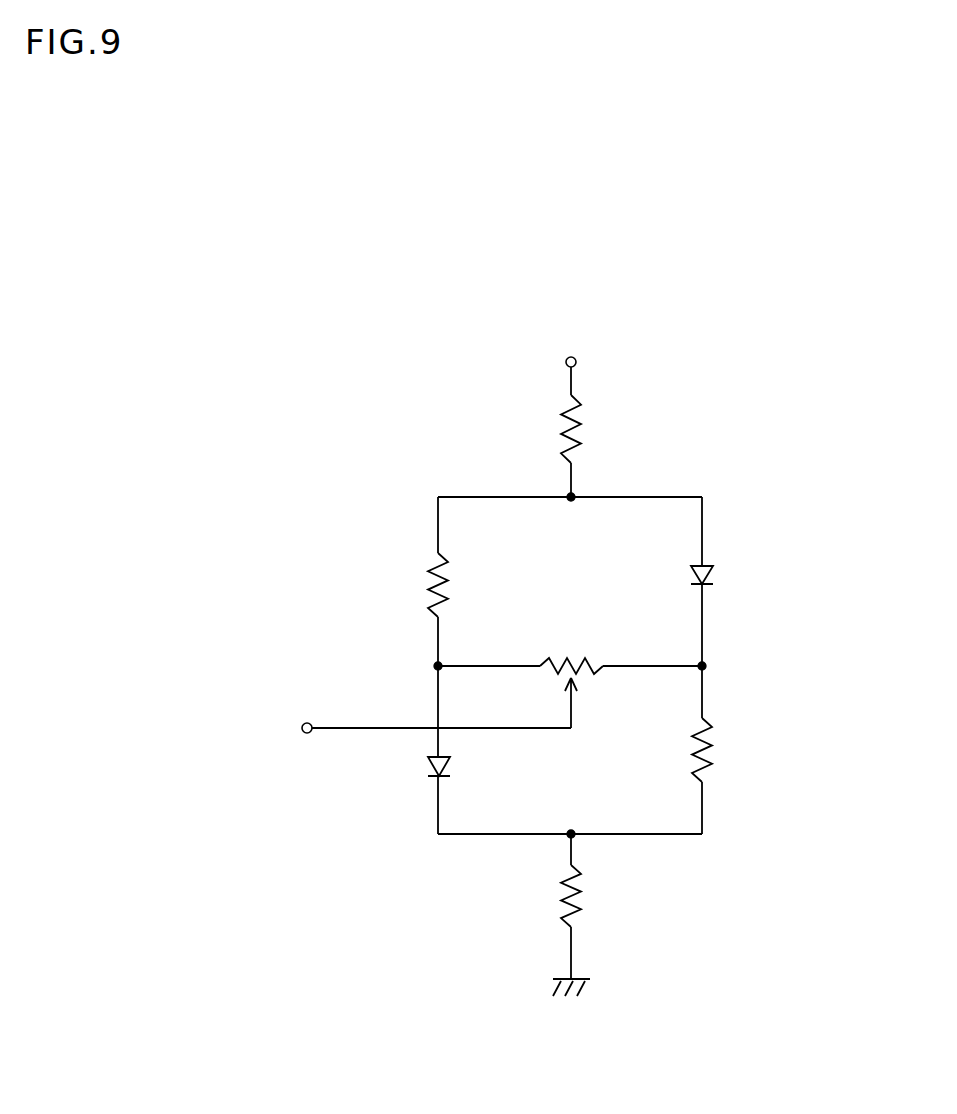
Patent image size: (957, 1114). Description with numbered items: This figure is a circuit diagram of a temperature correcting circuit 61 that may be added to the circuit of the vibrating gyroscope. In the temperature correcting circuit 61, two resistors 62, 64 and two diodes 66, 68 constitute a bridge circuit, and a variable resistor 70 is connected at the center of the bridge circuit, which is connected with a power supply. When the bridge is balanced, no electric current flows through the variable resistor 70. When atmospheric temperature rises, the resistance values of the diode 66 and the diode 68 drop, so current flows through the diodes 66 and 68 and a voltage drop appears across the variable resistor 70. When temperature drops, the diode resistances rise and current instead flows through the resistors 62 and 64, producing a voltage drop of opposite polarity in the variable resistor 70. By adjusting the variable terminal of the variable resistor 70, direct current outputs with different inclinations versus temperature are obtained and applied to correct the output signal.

The temperature correcting circuit 61 is at (327, 190).
The resistor 62 is at (435, 559).
The resistor 64 is at (712, 748).
The diode 66 is at (716, 570).
The diode 68 is at (428, 765).
The variable resistor 70 is at (553, 660).